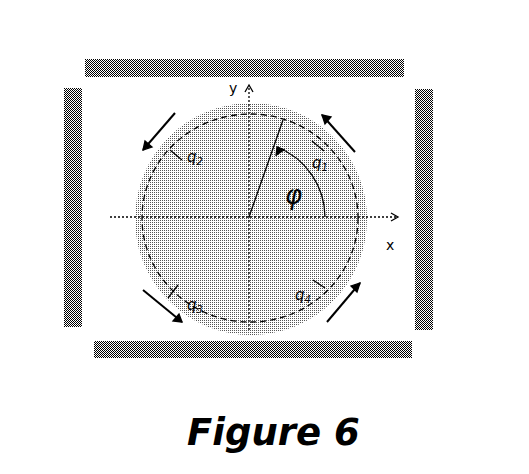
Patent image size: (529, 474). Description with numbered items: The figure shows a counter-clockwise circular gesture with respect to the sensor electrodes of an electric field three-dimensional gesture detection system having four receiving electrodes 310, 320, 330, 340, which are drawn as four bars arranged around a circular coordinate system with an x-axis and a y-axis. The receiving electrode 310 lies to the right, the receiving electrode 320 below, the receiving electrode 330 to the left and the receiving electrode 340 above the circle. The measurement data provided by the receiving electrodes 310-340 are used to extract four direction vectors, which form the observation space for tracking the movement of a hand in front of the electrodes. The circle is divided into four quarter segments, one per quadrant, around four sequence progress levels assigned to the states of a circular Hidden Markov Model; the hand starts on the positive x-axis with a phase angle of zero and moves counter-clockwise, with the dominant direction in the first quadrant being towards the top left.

The receiving electrode 310 is at (437, 190).
The receiving electrode 320 is at (182, 358).
The receiving electrode 330 is at (64, 228).
The receiving electrode 340 is at (273, 58).